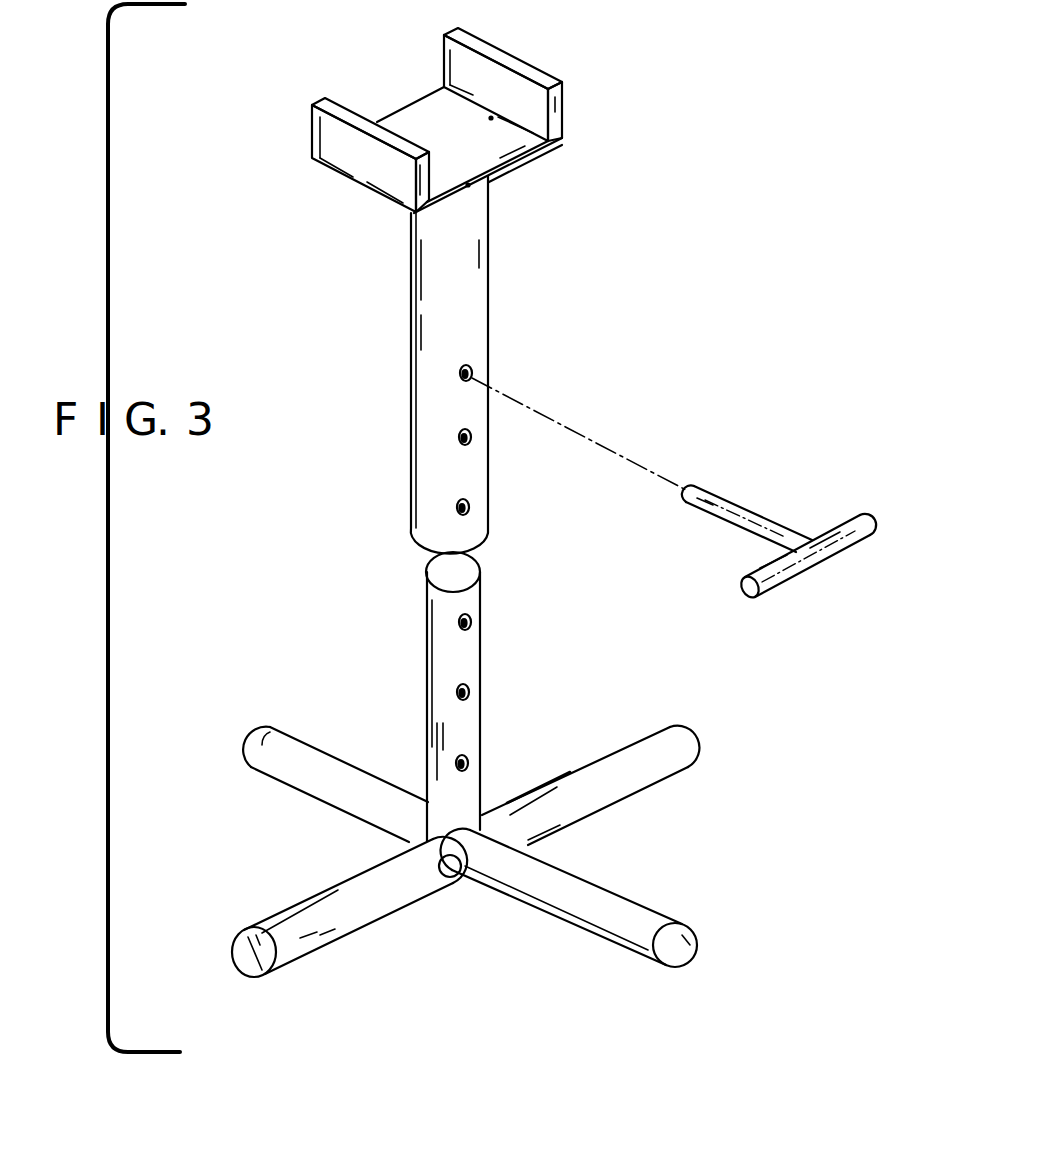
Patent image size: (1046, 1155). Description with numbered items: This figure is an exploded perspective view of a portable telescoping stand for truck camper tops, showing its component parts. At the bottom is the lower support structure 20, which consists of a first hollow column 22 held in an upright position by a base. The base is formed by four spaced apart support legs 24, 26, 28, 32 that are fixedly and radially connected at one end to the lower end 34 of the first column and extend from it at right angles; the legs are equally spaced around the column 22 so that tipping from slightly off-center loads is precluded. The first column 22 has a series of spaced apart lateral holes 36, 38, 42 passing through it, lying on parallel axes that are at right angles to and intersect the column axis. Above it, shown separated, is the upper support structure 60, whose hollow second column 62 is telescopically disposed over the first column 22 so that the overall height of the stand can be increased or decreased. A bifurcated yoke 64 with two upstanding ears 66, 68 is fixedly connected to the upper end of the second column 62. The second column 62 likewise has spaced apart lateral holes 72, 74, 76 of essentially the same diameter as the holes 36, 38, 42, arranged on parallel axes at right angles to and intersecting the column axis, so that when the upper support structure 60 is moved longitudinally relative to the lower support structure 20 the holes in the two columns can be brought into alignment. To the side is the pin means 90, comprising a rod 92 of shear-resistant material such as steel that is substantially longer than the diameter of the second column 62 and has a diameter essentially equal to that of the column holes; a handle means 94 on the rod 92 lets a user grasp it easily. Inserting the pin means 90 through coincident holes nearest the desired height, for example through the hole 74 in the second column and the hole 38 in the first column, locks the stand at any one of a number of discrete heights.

The lower support structure 20 is at (518, 728).
The first hollow column 22 is at (437, 633).
The support leg 24 is at (312, 782).
The support leg 26 is at (285, 946).
The support leg 28 is at (632, 928).
The support leg 32 is at (587, 800).
The lower end of the first column 34 is at (452, 874).
The lateral hole 36 is at (473, 620).
The lateral hole 38 is at (458, 694).
The lateral hole 42 is at (457, 763).
The upper support structure 60 is at (511, 197).
The second column 62 is at (443, 300).
The bifurcated yoke 64 is at (507, 155).
The upstanding ear 66 is at (483, 50).
The upstanding ear 68 is at (368, 125).
The lateral hole 72 is at (460, 373).
The lateral hole 74 is at (473, 437).
The lateral hole 76 is at (458, 506).
The pin means 90 is at (763, 499).
The rod 92 is at (747, 518).
The handle means 94 is at (790, 567).